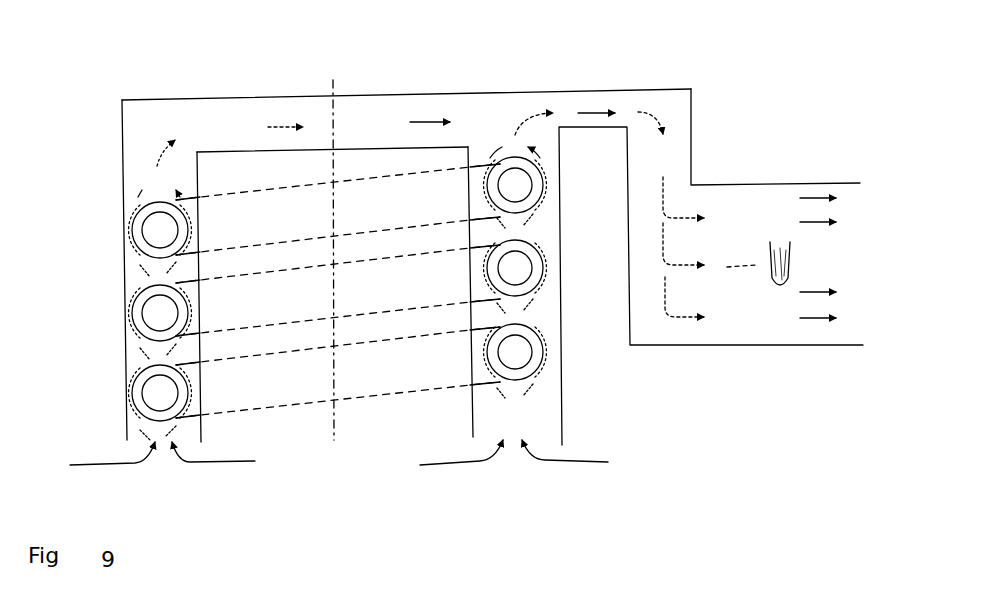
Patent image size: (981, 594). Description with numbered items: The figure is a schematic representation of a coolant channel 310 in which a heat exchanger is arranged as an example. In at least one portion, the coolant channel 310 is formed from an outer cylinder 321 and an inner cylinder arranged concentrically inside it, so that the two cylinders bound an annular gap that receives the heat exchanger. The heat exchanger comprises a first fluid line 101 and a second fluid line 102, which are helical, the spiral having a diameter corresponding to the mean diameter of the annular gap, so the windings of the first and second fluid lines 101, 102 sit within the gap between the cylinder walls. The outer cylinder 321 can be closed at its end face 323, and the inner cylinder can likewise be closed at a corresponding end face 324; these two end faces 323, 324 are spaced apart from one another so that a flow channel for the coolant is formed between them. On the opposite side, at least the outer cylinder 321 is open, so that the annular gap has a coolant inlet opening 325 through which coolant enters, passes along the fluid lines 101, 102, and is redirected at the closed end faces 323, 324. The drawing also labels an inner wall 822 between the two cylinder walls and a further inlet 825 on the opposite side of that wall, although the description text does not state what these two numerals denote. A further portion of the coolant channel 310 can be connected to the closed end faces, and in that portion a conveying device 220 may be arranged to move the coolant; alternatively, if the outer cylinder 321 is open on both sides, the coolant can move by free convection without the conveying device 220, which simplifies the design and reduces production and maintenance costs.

The outer cylinder 321 is at (122, 163).
The end face 323 is at (370, 97).
The inner partition wall 822 is at (197, 182).
The end face 324 is at (390, 147).
The coolant channel 310 is at (645, 333).
The conveying device 220 is at (755, 205).
The first fluid line 101 is at (158, 322).
The second fluid line 102 is at (130, 290).
The coolant inlet opening 325 is at (172, 463).
The right air inlet 825 is at (505, 420).